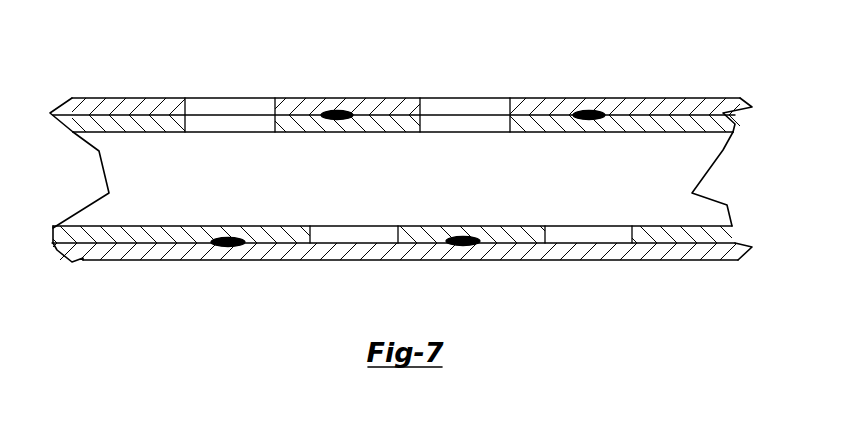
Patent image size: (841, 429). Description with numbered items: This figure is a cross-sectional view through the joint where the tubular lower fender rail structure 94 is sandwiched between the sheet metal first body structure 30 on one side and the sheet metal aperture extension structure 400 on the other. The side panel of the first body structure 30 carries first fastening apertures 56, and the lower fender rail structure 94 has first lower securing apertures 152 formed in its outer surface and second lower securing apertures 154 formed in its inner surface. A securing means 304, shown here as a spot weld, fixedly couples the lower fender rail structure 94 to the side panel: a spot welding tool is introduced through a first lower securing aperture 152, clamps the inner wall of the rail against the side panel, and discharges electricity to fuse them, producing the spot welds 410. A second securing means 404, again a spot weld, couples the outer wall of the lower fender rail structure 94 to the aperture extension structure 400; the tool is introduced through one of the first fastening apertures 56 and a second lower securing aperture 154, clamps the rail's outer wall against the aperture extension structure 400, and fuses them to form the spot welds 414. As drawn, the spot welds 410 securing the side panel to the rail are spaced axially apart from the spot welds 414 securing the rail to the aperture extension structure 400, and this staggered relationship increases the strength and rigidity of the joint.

The first body structure 30 is at (663, 100).
The first fastening apertures 56 is at (217, 102).
The lower fender rail structure 94 is at (685, 230).
The first lower securing apertures 152 is at (338, 231).
The second lower securing apertures 154 is at (232, 120).
The securing means 304 is at (328, 106).
The securing means 404 is at (246, 238).
The aperture extension structure 400 is at (661, 250).
The spot welds 410 is at (366, 99).
The spot welds 414 is at (214, 250).